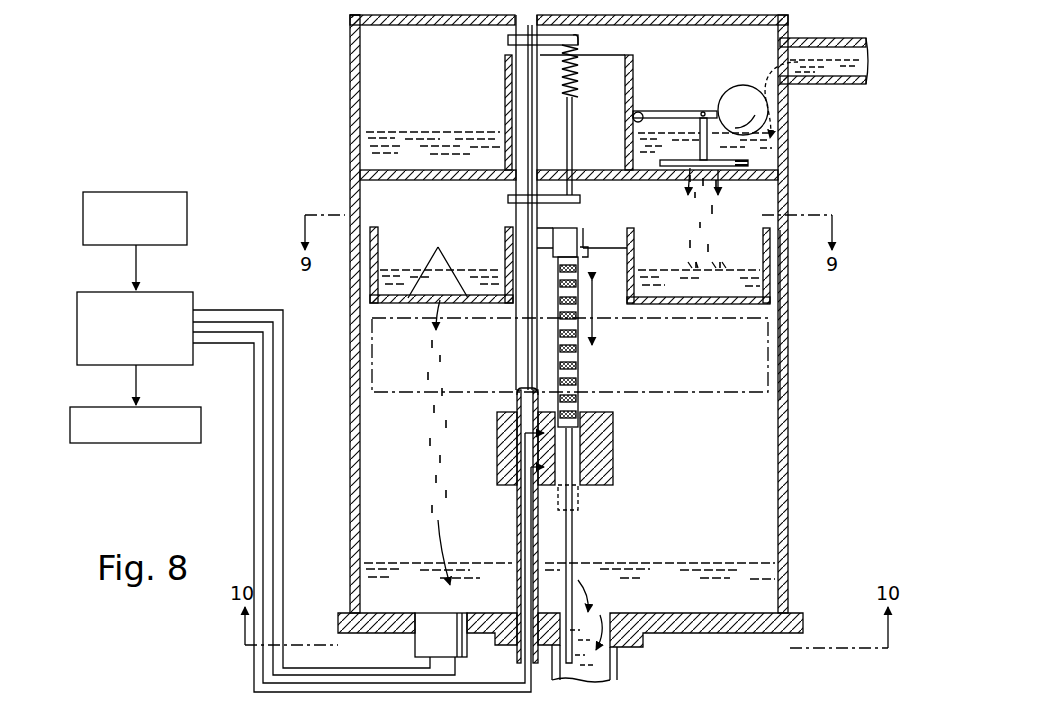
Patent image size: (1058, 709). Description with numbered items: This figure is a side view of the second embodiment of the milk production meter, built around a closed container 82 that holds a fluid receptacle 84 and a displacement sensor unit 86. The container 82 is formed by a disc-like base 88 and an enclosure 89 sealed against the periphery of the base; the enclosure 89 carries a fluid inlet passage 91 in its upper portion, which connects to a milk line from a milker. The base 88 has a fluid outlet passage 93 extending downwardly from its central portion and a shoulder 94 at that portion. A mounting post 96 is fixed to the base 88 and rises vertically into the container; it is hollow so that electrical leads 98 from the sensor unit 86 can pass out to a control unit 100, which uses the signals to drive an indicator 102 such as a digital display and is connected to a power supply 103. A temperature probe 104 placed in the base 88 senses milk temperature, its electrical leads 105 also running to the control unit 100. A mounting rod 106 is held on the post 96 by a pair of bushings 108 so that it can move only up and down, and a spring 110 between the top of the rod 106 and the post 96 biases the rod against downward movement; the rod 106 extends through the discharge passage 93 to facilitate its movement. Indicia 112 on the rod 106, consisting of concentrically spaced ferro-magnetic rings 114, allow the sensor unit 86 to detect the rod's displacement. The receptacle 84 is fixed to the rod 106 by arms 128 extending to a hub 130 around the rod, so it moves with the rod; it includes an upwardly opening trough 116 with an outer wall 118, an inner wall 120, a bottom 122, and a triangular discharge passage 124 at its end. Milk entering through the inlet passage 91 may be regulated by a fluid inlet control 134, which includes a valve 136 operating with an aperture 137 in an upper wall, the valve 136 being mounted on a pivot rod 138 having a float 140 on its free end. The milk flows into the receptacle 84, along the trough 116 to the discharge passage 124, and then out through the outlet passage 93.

The container 82 is at (338, 149).
The fluid receptacle 84 is at (745, 232).
The displacement sensor unit 86 is at (617, 447).
The base 88 is at (599, 639).
The enclosure 89 is at (350, 93).
The fluid inlet passage 91 is at (826, 36).
The fluid outlet passage 93 is at (600, 662).
The shoulder 94 is at (644, 640).
The mounting post 96 is at (517, 524).
The electrical leads 98 is at (254, 489).
The control unit 100 is at (77, 312).
The indicator 102 is at (80, 408).
The power supply 103 is at (190, 208).
The temperature probe 104 is at (415, 640).
The electrical leads 105 is at (284, 503).
The mounting rod 106 is at (573, 545).
The bushings 108 is at (578, 198).
The spring 110 is at (577, 80).
The indicia 112 is at (590, 386).
The rings 114 is at (578, 383).
The trough 116 is at (714, 306).
The outer wall 118 is at (441, 248).
The inner wall 120 is at (504, 236).
The bottom 122 is at (698, 287).
The discharge passage 124 is at (436, 290).
The arms 128 is at (633, 232).
The hub 130 is at (582, 248).
The fluid inlet control 134 is at (700, 132).
The valve 136 is at (690, 168).
The aperture 137 is at (760, 170).
The pivot rod 138 is at (675, 115).
The float 140 is at (757, 117).